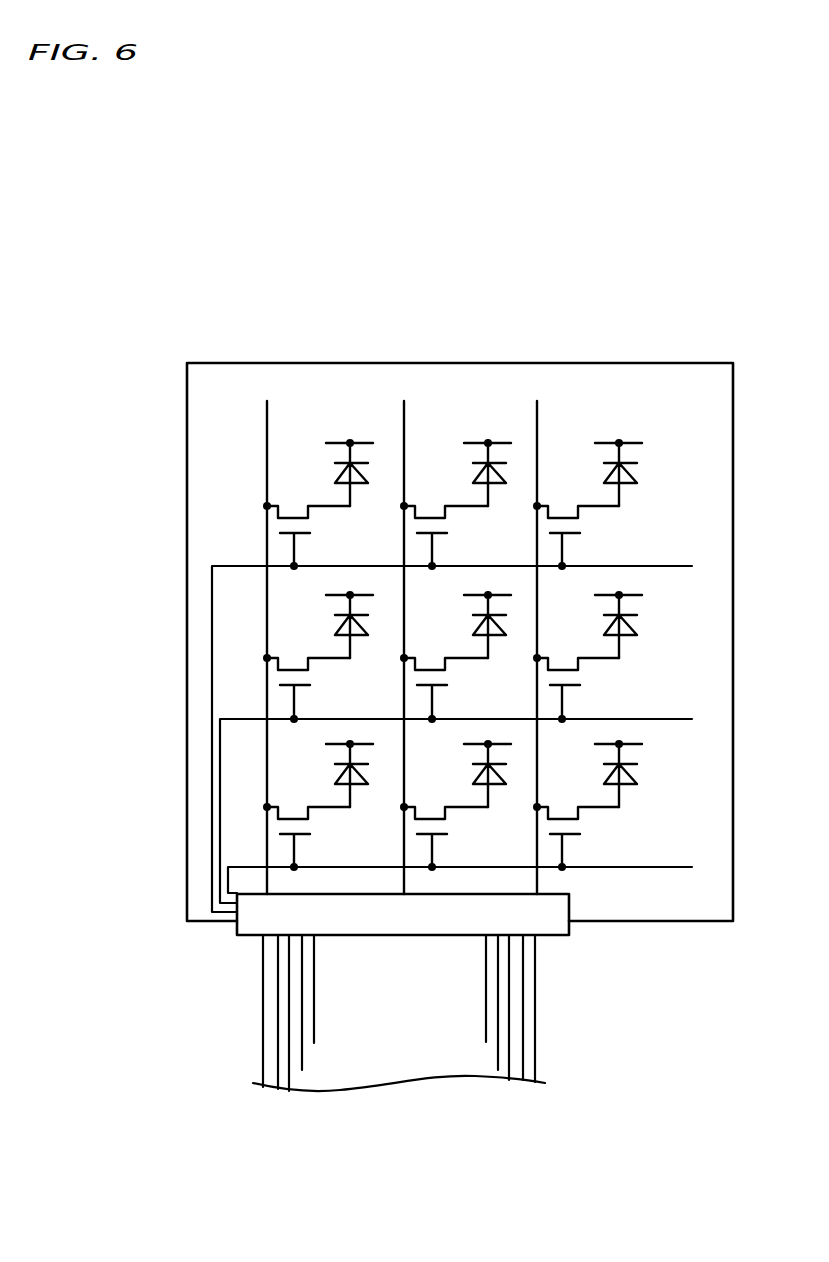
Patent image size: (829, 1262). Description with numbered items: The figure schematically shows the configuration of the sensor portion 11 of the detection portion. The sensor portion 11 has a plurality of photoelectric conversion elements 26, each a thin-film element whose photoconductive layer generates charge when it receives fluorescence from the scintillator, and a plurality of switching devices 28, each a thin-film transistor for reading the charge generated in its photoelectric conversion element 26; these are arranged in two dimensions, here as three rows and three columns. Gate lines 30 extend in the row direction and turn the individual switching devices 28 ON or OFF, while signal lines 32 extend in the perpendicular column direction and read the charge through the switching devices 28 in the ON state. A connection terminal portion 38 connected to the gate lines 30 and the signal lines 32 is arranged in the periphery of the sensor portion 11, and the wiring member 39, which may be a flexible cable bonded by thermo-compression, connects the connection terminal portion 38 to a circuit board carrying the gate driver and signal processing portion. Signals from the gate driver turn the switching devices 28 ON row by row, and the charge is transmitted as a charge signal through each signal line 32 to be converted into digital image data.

The sensor portion 11 is at (681, 326).
The photoelectric conversion element 26 is at (351, 490).
The switching device 28 is at (292, 493).
The gate line 30 is at (672, 567).
The signal line 32 is at (268, 422).
The connection terminal portion 38 is at (550, 930).
The wiring member 39 is at (528, 1029).